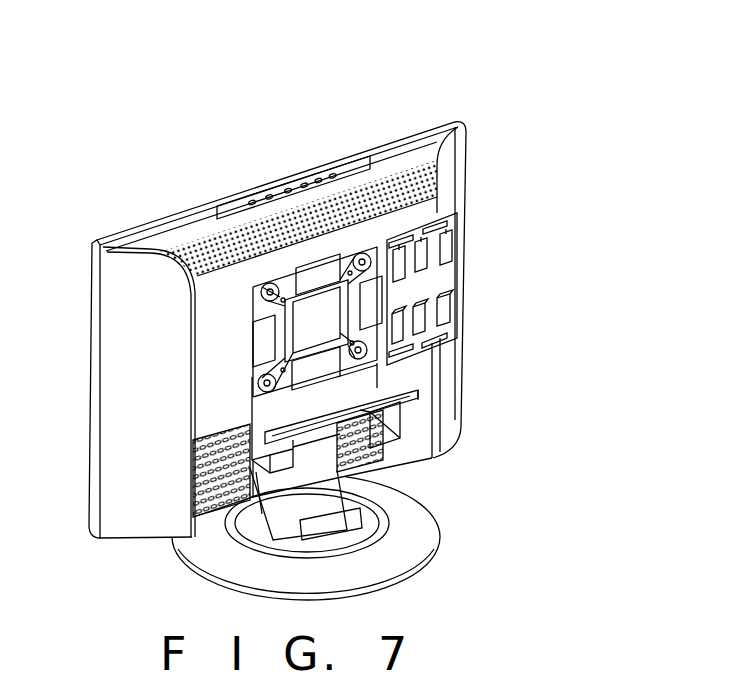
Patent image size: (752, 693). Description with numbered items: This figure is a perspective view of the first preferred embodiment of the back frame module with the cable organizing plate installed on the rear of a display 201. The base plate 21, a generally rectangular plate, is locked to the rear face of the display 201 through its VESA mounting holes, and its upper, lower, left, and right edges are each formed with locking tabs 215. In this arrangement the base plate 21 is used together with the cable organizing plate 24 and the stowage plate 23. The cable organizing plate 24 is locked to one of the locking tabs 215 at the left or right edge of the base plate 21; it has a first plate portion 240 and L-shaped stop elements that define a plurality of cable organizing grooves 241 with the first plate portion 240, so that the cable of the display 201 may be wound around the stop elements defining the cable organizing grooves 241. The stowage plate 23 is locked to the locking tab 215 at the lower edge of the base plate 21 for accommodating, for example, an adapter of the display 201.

The base plate 21 is at (247, 273).
The display 201 is at (436, 130).
The cable organizing plate 24 is at (458, 238).
The first plate portion 240 is at (445, 280).
The cable organizing grooves 241 is at (424, 245).
The locking tabs 215 is at (372, 300).
The stowage plate 23 is at (233, 409).